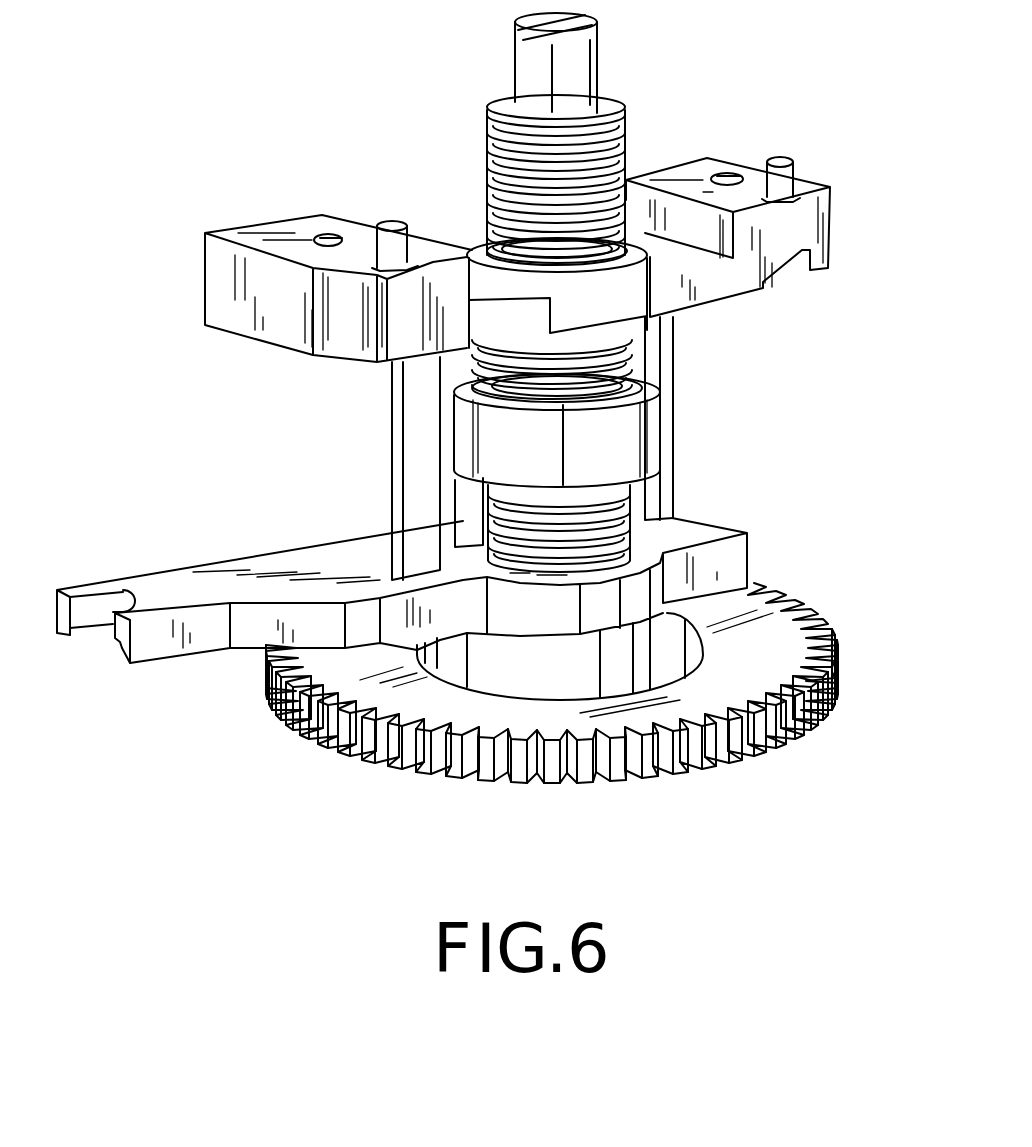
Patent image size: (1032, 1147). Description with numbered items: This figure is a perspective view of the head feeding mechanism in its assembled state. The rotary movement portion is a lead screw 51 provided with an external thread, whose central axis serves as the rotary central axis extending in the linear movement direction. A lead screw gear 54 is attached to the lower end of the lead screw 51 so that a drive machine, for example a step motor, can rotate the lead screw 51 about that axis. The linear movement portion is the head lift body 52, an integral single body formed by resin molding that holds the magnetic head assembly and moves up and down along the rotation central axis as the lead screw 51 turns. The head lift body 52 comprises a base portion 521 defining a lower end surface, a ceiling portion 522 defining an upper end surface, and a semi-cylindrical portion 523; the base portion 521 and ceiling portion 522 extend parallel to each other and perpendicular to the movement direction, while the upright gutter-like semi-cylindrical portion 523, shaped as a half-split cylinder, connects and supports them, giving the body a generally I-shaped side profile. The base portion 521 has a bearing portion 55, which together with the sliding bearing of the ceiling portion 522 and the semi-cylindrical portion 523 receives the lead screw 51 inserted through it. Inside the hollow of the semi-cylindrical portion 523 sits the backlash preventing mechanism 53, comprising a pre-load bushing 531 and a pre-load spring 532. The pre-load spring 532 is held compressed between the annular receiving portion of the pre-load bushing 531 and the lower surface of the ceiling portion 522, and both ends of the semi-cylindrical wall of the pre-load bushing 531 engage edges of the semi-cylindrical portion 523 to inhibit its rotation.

The lead screw 51 is at (605, 102).
The head lift body 52 is at (456, 393).
The base portion 521 is at (456, 589).
The ceiling portion 522 is at (288, 330).
The semi-cylindrical portion 523 is at (388, 430).
The backlash preventing mechanism 53 is at (664, 430).
The pre-load bushing 531 is at (647, 440).
The pre-load spring 532 is at (676, 394).
The lead screw gear 54 is at (328, 740).
The bearing portion 55 is at (640, 490).